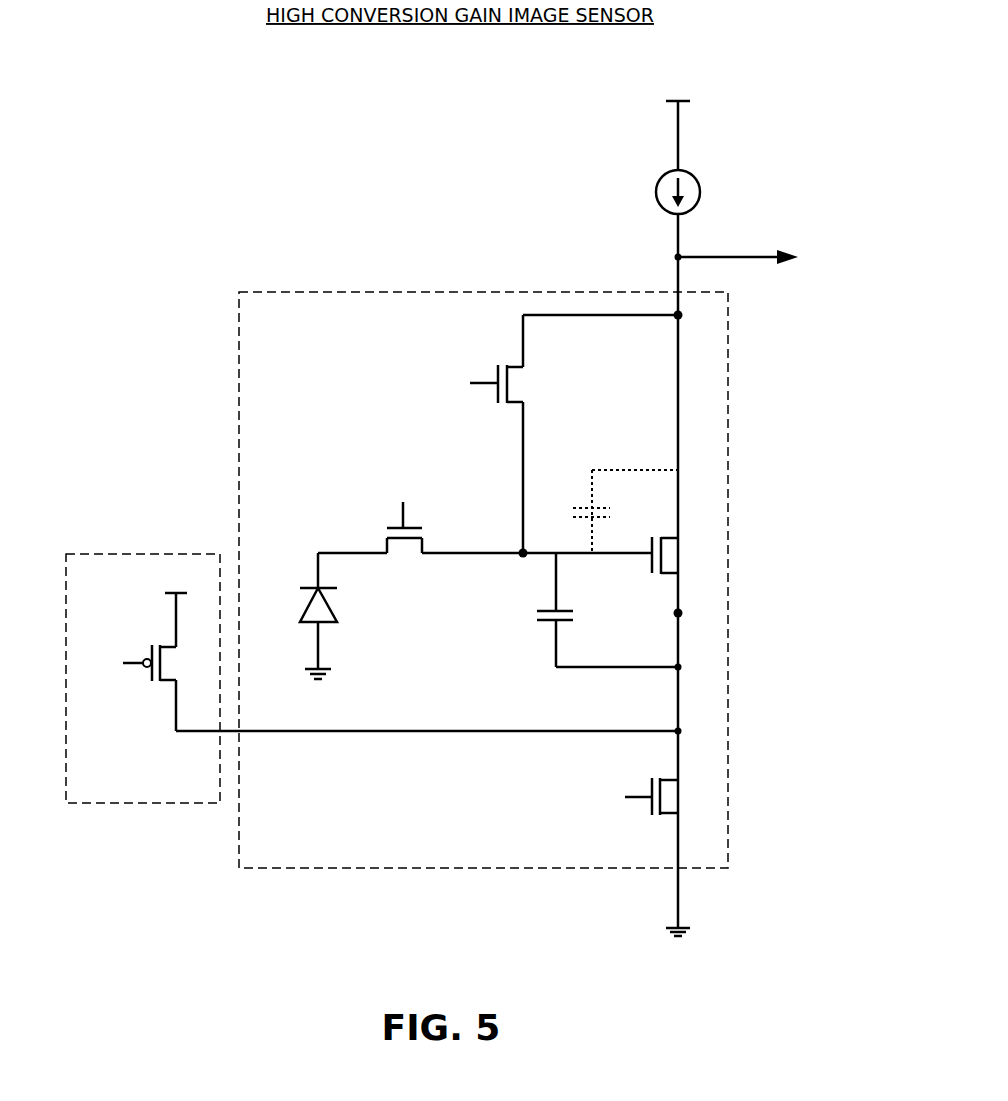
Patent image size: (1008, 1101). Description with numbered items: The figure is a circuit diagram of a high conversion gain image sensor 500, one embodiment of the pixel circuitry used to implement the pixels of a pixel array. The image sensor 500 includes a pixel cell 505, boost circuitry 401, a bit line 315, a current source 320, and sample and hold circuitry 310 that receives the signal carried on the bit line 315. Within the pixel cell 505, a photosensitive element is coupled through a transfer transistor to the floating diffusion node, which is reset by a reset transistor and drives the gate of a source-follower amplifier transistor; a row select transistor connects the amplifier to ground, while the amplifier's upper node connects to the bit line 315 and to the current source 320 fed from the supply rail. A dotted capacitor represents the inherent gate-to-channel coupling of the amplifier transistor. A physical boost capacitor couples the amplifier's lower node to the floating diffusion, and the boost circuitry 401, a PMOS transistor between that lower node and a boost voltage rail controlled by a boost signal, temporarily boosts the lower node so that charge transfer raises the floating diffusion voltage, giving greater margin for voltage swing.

The high conversion gain image sensor 500 is at (174, 124).
The current source 320 is at (658, 178).
The bit line 315 is at (676, 267).
The sample and hold circuitry 310 is at (822, 282).
The pixel cell 505 is at (483, 580).
The boost circuitry 401 is at (372, 678).